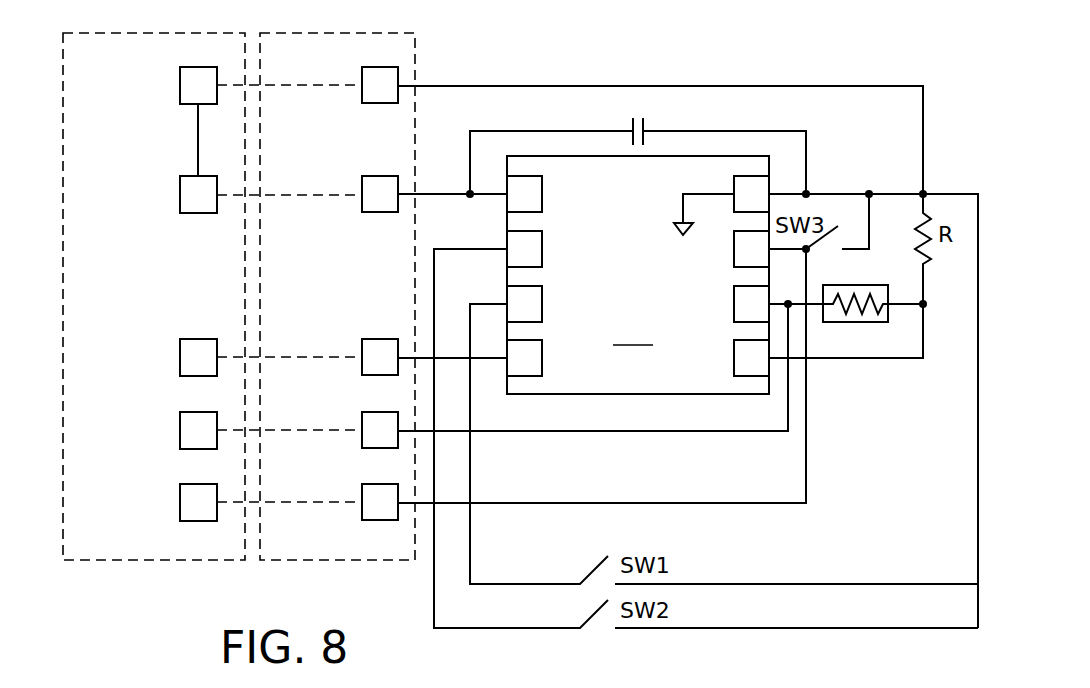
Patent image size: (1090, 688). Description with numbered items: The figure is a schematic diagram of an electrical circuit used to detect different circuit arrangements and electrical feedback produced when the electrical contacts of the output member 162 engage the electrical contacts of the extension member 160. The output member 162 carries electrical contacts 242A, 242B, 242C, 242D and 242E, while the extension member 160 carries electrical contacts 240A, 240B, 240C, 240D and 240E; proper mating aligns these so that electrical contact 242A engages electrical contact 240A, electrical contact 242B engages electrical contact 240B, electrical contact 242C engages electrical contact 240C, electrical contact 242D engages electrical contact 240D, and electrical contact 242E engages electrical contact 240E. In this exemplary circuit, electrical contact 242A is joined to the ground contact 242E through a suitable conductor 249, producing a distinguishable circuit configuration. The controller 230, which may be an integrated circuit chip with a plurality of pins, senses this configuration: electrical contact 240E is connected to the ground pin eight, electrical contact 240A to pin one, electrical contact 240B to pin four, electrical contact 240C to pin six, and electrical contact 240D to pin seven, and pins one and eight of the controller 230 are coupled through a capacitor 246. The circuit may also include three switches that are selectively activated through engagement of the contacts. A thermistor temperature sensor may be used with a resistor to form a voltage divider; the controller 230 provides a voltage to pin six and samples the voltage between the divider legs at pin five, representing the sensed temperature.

The electrical contact 242E is at (180, 89).
The electrical contact 242A is at (180, 198).
The electrical contact 242B is at (180, 360).
The electrical contact 242C is at (180, 433).
The electrical contact 242D is at (180, 505).
The conductor 249 is at (198, 142).
The electrical contact 240E is at (371, 104).
The electrical contact 240A is at (371, 213).
The electrical contact 240B is at (371, 376).
The electrical contact 240C is at (371, 449).
The electrical contact 240D is at (371, 521).
The output member 162 is at (165, 563).
The extension member 160 is at (330, 563).
The capacitor 246 is at (645, 126).
The controller 230 is at (852, 322).